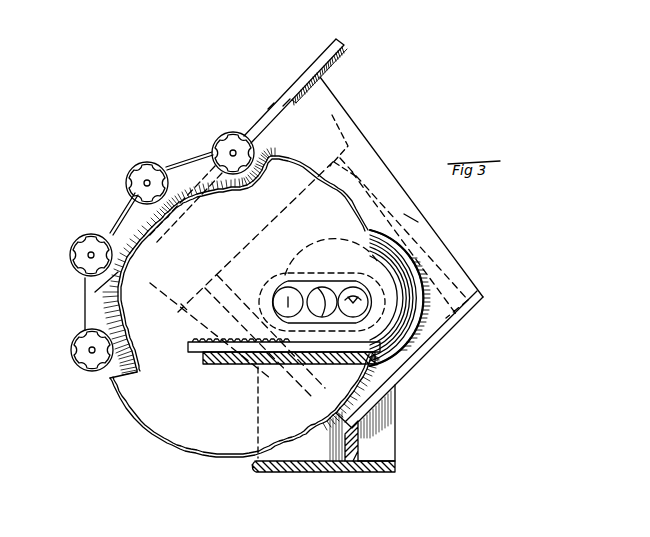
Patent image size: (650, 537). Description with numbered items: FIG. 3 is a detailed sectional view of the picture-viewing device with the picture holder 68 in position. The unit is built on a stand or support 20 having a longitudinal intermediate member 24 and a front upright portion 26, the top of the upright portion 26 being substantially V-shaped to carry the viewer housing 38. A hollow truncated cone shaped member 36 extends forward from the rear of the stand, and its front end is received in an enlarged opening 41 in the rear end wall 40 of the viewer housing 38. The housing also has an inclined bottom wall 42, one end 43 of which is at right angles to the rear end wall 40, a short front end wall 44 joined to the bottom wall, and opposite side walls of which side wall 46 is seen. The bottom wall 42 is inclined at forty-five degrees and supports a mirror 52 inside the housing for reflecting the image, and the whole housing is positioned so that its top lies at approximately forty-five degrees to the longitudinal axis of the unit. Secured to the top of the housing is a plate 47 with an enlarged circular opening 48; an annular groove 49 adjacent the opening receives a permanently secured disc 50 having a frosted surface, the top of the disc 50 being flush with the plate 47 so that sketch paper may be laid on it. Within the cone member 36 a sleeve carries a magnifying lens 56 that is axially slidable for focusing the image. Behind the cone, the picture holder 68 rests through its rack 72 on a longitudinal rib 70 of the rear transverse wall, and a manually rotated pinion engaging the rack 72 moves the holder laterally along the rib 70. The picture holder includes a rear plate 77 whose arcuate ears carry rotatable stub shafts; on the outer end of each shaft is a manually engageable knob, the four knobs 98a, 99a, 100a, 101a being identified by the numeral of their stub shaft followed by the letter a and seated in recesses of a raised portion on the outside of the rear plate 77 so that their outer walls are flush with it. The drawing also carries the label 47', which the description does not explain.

The stand or support 20 is at (380, 440).
The longitudinal intermediate member 24 is at (320, 472).
The front upright portion 26 is at (240, 457).
The hollow truncated cone shaped member 36 is at (415, 268).
The viewer housing 38 is at (378, 143).
The rear end wall 40 is at (411, 218).
The enlarged opening 41 is at (420, 306).
The inclined bottom wall 42 is at (343, 418).
The end of inclined bottom wall 43 is at (410, 375).
The short front end wall 44 is at (345, 103).
The side wall 46 is at (411, 206).
The plate 47 is at (246, 137).
The rod in alternate position 47' is at (242, 285).
The enlarged circular opening 48 is at (305, 76).
The annular groove 49 is at (287, 100).
The disc 50 is at (272, 101).
The mirror 52 is at (391, 179).
The magnifying lens 56 is at (352, 288).
The picture holder 68 is at (143, 427).
The longitudinal rib 70 is at (226, 364).
The rack 72 is at (200, 343).
The rear plate 77 is at (169, 441).
The manually engageable knob 98a is at (229, 148).
The manually engageable knob 99a is at (149, 175).
The manually engageable knob 100a is at (85, 250).
The manually engageable knob 101a is at (88, 372).